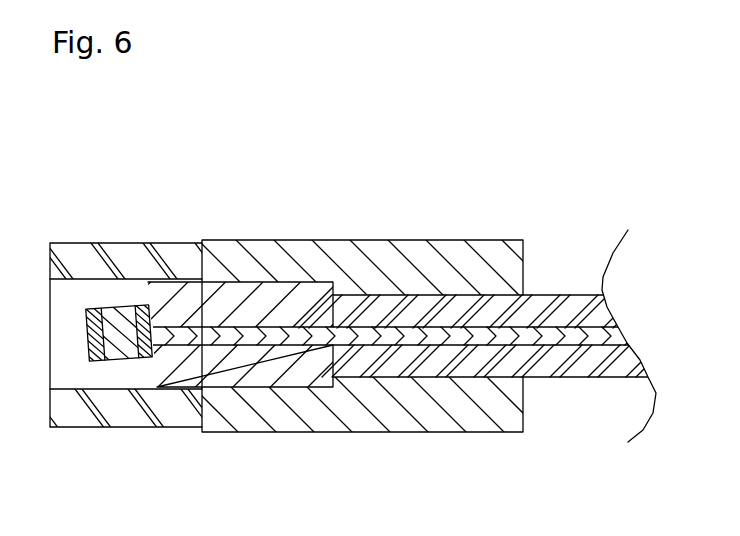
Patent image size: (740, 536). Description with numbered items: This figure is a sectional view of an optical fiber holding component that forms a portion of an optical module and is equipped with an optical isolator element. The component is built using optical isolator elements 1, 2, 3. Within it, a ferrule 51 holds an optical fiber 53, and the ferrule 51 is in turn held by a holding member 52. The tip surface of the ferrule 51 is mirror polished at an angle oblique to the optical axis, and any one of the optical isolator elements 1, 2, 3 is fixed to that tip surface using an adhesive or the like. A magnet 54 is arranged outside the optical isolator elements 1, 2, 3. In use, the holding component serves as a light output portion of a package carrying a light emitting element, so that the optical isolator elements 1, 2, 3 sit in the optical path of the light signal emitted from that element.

The optical isolator element 1 is at (118, 416).
The optical isolator element 2 is at (118, 416).
The optical isolator element 3 is at (118, 416).
The ferrule 51 is at (230, 247).
The holding member 52 is at (347, 273).
The optical fiber 53 is at (405, 380).
The magnet 54 is at (125, 268).